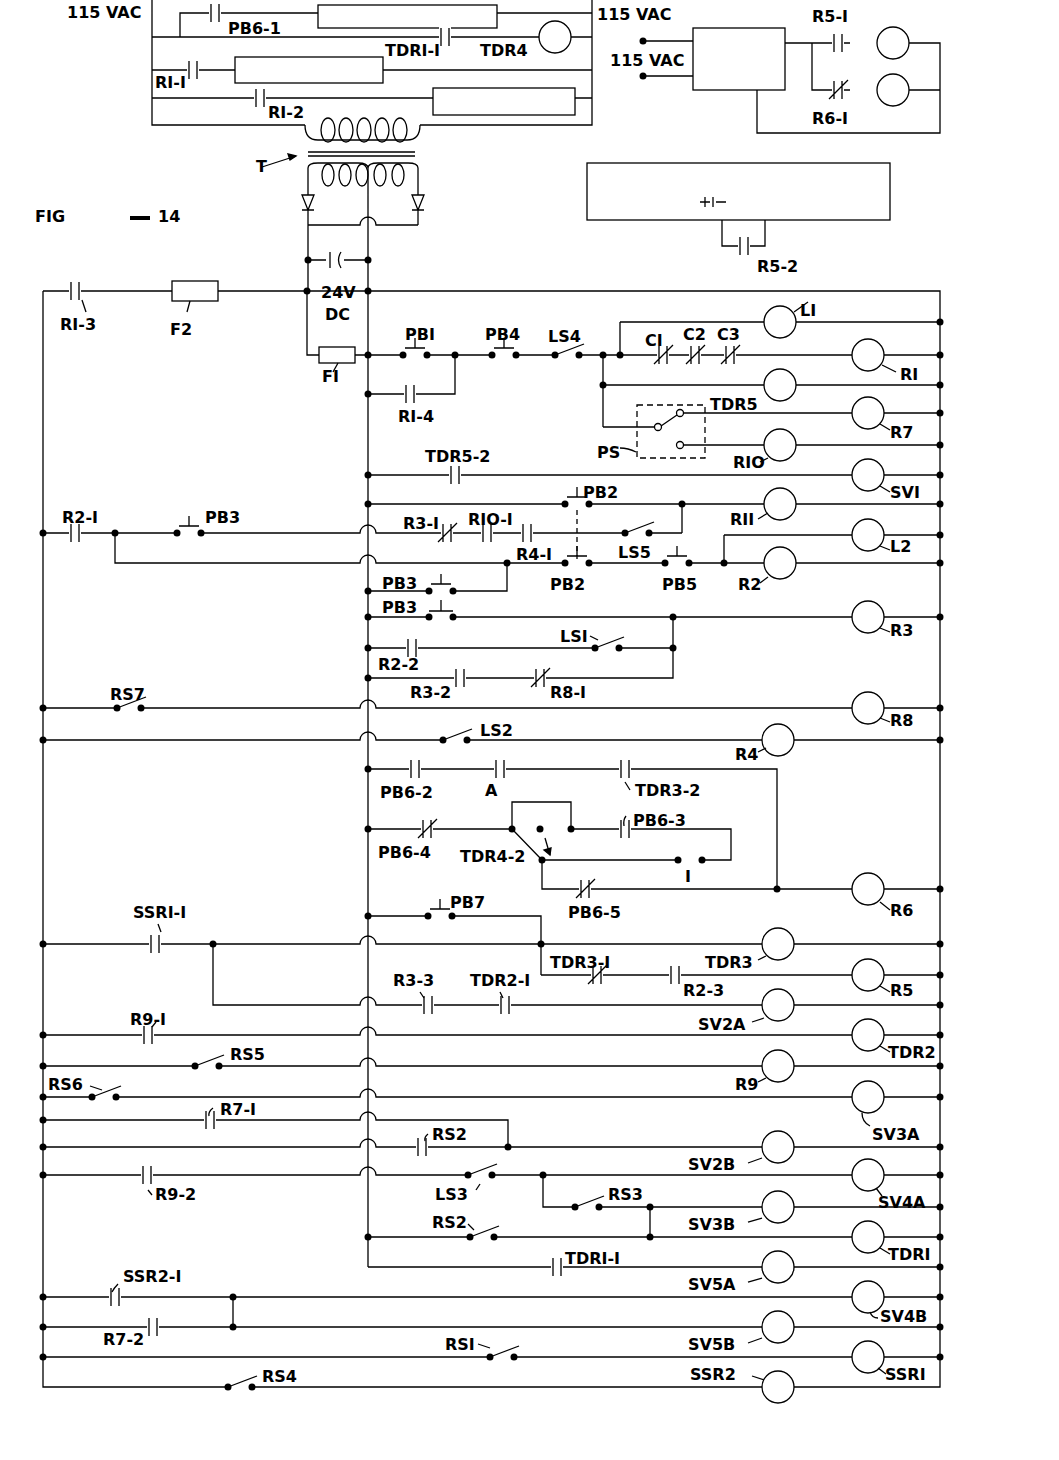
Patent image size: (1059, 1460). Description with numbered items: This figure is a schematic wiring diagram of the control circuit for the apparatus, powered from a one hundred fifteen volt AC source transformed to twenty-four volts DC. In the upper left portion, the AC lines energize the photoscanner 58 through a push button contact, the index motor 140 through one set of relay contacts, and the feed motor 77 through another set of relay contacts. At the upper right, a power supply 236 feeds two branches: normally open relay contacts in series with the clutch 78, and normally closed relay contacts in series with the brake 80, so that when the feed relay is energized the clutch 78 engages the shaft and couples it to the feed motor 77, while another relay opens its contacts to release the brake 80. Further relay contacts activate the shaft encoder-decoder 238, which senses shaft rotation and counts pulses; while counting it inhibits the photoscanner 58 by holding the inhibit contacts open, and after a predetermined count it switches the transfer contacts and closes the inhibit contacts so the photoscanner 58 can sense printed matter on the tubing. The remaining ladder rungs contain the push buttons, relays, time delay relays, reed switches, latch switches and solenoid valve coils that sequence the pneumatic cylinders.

The photoscanner 58 is at (497, 20).
The index motor 140 is at (235, 60).
The feed motor 77 is at (433, 90).
The power supply 236 is at (735, 90).
The shaft encoder-decoder 238 is at (865, 220).
The clutch 78 is at (903, 31).
The brake 80 is at (903, 102).